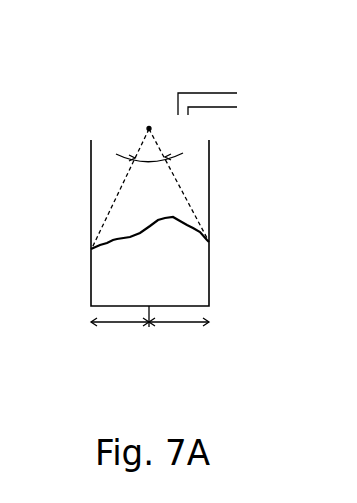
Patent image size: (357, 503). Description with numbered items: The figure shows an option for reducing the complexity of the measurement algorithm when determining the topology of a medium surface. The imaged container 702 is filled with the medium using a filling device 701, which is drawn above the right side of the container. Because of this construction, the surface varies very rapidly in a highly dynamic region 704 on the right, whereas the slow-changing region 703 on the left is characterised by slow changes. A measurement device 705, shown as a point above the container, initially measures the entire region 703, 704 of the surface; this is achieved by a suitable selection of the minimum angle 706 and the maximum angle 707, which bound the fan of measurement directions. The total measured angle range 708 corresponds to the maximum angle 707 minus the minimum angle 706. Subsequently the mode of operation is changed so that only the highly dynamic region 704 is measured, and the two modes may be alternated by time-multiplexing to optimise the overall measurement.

The filling device 701 is at (203, 92).
The container 702 is at (209, 262).
The slow-changing region 703 is at (122, 347).
The highly dynamic region 704 is at (182, 347).
The measurement device 705 is at (150, 100).
The minimum angle 706 is at (118, 193).
The maximum angle 707 is at (175, 177).
The total measured angle range 708 is at (112, 127).